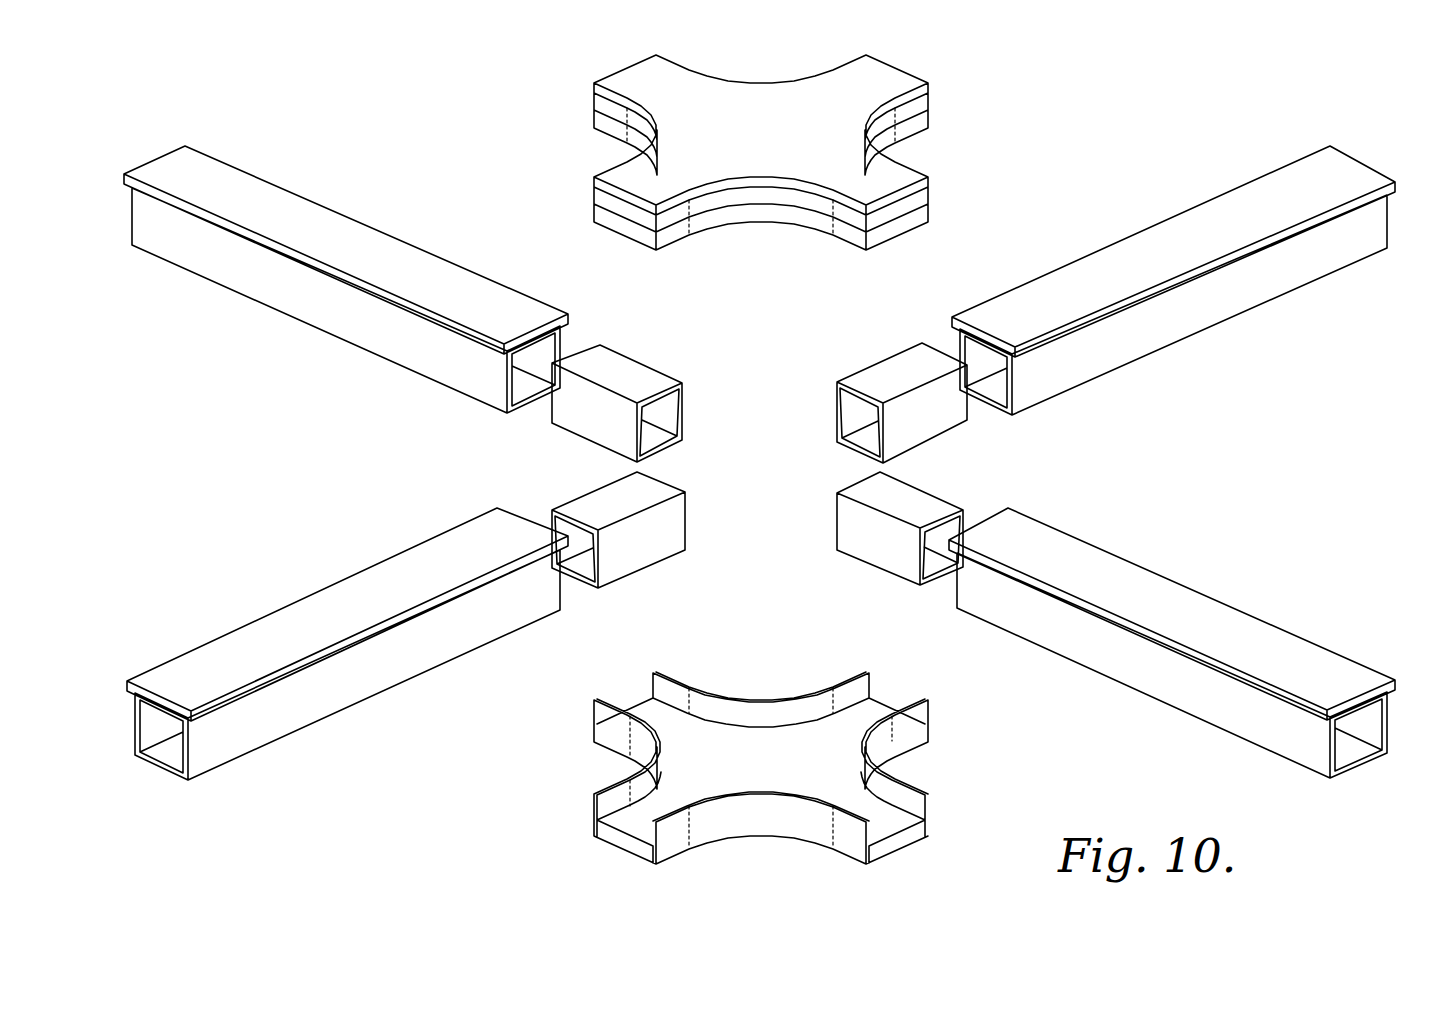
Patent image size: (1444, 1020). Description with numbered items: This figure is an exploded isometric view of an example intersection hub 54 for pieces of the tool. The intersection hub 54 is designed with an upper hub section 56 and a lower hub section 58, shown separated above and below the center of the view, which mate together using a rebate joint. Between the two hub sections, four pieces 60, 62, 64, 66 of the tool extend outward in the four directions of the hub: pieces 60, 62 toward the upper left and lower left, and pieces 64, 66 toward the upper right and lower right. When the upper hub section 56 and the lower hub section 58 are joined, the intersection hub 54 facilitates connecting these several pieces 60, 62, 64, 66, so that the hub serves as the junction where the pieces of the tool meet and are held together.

The intersection hub 54 is at (930, 72).
The upper hub section 56 is at (733, 100).
The lower hub section 58 is at (767, 820).
The piece 60 is at (177, 241).
The piece 62 is at (200, 743).
The piece 64 is at (1360, 238).
The piece 66 is at (1345, 745).